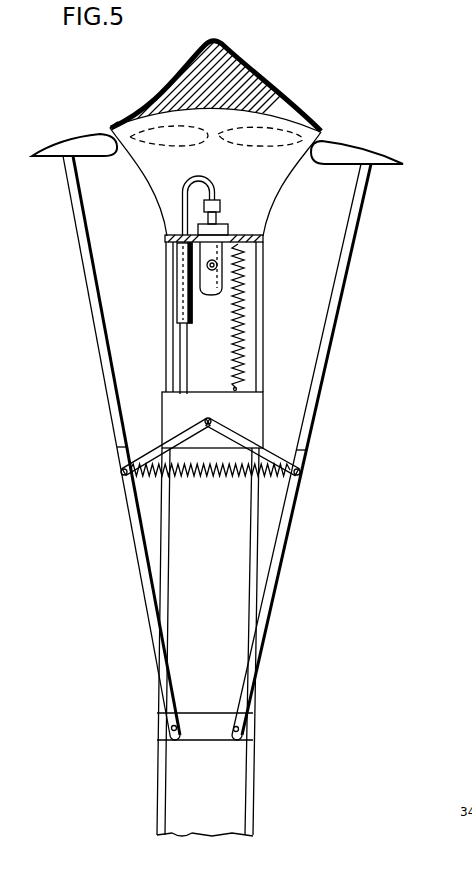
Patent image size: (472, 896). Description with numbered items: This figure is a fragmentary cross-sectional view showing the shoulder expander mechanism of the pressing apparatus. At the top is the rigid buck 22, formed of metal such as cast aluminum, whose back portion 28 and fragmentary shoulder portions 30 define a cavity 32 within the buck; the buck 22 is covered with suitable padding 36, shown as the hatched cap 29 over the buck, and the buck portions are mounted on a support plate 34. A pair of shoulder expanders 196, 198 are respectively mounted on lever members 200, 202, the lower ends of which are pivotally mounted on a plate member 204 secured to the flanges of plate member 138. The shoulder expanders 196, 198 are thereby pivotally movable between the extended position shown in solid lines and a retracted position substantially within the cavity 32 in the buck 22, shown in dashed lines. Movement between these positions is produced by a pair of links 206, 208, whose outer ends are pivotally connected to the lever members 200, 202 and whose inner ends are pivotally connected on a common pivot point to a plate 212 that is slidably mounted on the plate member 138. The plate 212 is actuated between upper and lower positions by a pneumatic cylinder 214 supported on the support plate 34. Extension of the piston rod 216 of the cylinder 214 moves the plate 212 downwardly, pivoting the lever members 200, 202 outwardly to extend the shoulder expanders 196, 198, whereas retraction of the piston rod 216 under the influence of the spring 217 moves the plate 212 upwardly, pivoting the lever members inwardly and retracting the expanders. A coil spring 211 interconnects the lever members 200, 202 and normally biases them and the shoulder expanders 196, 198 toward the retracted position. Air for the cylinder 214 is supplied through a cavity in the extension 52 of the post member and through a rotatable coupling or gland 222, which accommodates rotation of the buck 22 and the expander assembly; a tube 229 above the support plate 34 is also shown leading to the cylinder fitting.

The buck 22 is at (298, 92).
The back portion 28 is at (257, 203).
The cap 29 is at (226, 66).
The shoulder portion 30 is at (140, 105).
The cavity 32 is at (252, 165).
The support plate 34 is at (248, 232).
The padding 36 is at (172, 82).
The extension 52 is at (211, 296).
The plate member 138 is at (202, 822).
The shoulder expander 196 is at (68, 138).
The shoulder expander 198 is at (363, 147).
The lever member 200 is at (90, 315).
The lever member 202 is at (343, 288).
The plate member 204 is at (210, 732).
The link 206 is at (152, 447).
The link 208 is at (270, 448).
The coil spring 211 is at (211, 478).
The plate 212 is at (207, 397).
The pneumatic cylinder 214 is at (181, 282).
The piston rod 216 is at (179, 348).
The spring 217 is at (244, 320).
The rotatable coupling 222 is at (220, 210).
The supply tube 229 is at (193, 176).